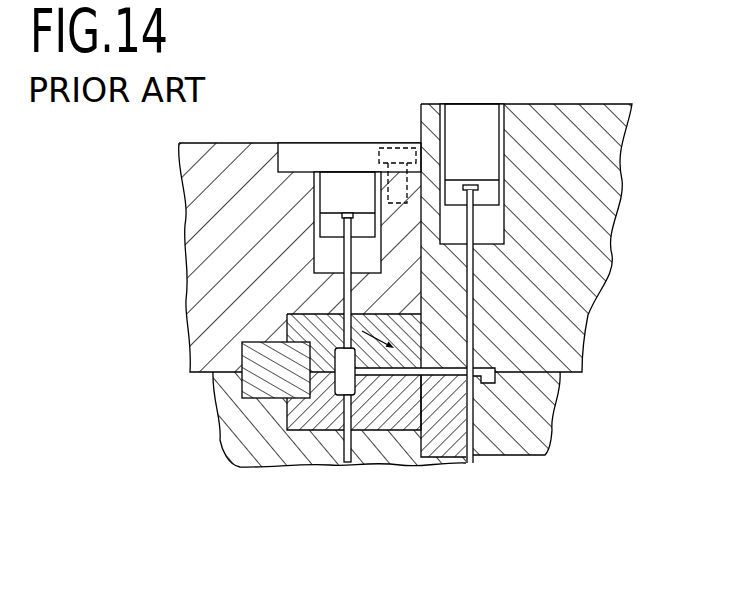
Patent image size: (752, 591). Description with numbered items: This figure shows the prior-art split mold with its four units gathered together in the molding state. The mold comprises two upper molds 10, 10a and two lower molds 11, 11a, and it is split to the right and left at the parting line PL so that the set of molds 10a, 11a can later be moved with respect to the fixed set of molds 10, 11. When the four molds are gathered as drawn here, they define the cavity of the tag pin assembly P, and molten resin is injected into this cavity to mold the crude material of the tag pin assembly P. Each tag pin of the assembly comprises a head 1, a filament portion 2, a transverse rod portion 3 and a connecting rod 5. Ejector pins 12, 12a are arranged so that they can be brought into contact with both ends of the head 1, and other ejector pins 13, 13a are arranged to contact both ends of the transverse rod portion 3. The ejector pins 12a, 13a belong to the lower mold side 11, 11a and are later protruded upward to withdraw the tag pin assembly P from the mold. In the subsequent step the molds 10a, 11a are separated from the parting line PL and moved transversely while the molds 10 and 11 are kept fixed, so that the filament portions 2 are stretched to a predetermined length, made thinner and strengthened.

The upper mold 10 is at (210, 210).
The upper mold 10a is at (587, 190).
The lower mold 11 is at (232, 430).
The lower mold 11a is at (557, 413).
The ejector pin 12 is at (343, 322).
The ejector pin 12a is at (347, 462).
The ejector pin 13 is at (476, 282).
The ejector pin 13a is at (470, 458).
The head 1 is at (303, 462).
The filament portion 2 is at (393, 463).
The transverse rod portion 3 is at (440, 460).
The connecting rod 5 is at (497, 367).
The tag pin assembly P is at (343, 333).
The parting line PL is at (430, 124).